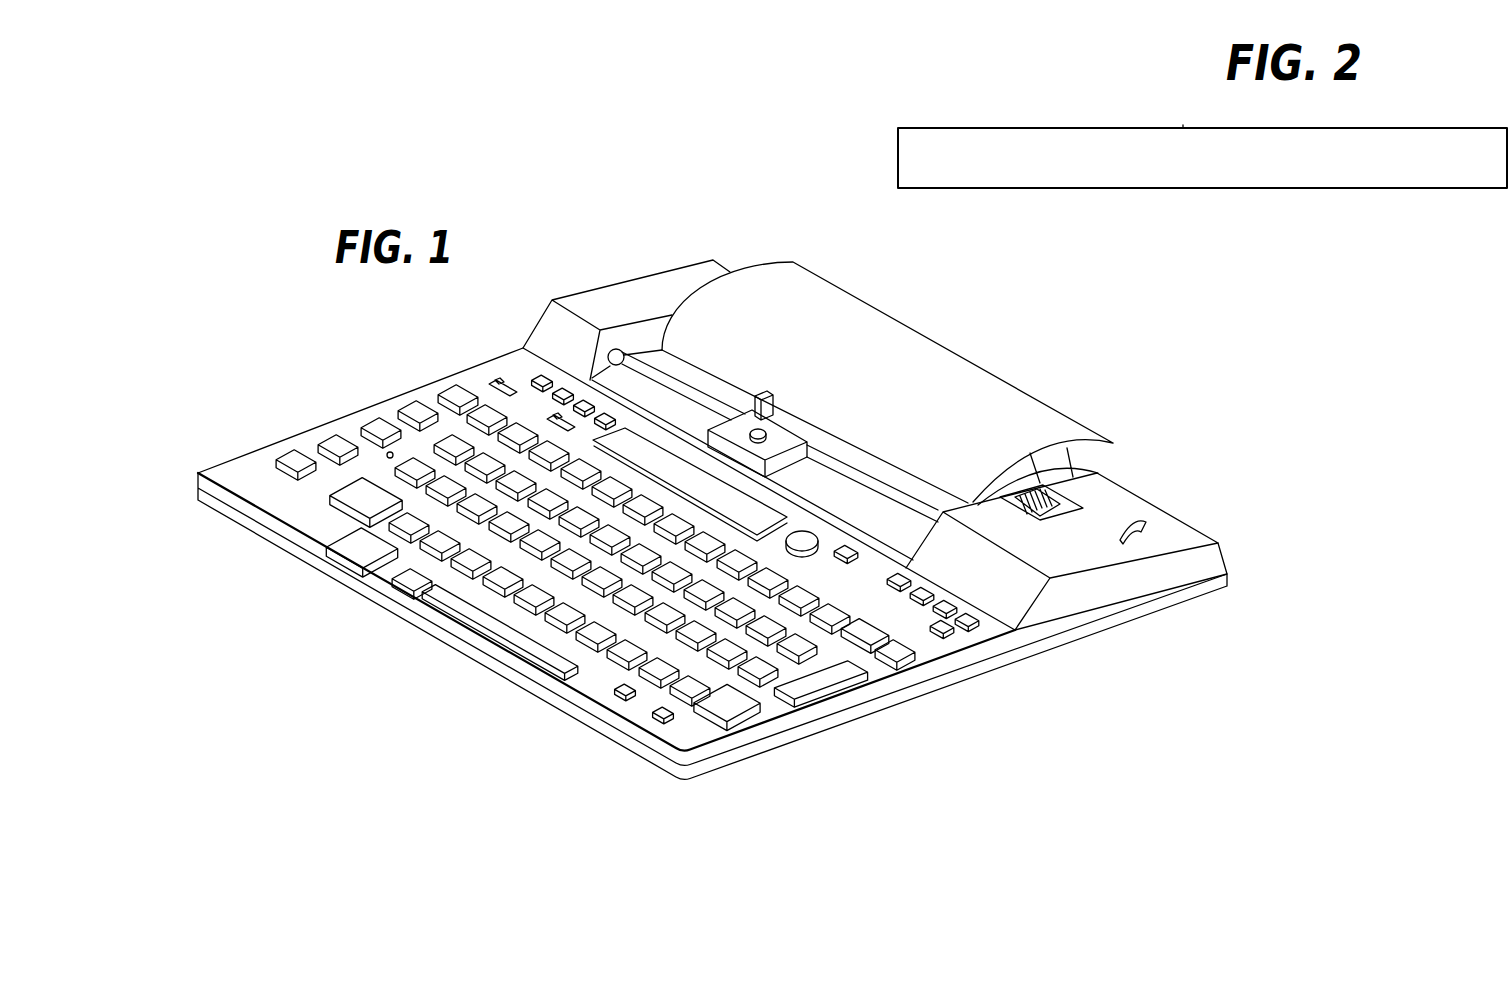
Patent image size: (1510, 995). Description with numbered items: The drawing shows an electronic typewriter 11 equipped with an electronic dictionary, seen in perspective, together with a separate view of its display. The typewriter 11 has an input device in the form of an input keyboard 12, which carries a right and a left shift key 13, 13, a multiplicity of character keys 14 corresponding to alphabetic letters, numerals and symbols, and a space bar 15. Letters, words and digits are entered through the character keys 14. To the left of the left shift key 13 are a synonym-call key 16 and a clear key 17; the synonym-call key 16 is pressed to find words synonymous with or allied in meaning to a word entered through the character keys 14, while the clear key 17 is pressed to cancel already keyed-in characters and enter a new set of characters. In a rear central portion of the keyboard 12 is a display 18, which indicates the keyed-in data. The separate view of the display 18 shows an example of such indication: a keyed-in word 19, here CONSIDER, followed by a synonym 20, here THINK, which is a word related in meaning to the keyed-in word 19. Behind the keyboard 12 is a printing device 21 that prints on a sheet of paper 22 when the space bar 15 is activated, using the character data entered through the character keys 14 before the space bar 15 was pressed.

In FIG. 1, the electronic typewriter 11 is at (563, 293).
In FIG. 1, the input keyboard 12 is at (985, 655).
In FIG. 1, the shift key 13 is at (356, 497).
In FIG. 1, the character keys 14 is at (537, 500).
In FIG. 1, the space bar 15 is at (504, 625).
In FIG. 1, the synonym-call key 16 is at (292, 458).
In FIG. 1, the clear key 17 is at (338, 442).
In FIG. 1, the display 18 is at (662, 465).
In FIG. 2, the display 18 is at (1437, 145).
In FIG. 2, the word 19 is at (1042, 143).
In FIG. 2, the synonym 20 is at (1184, 143).
In FIG. 1, the printing device 21 is at (1093, 556).
In FIG. 1, the sheet of paper 22 is at (1024, 408).